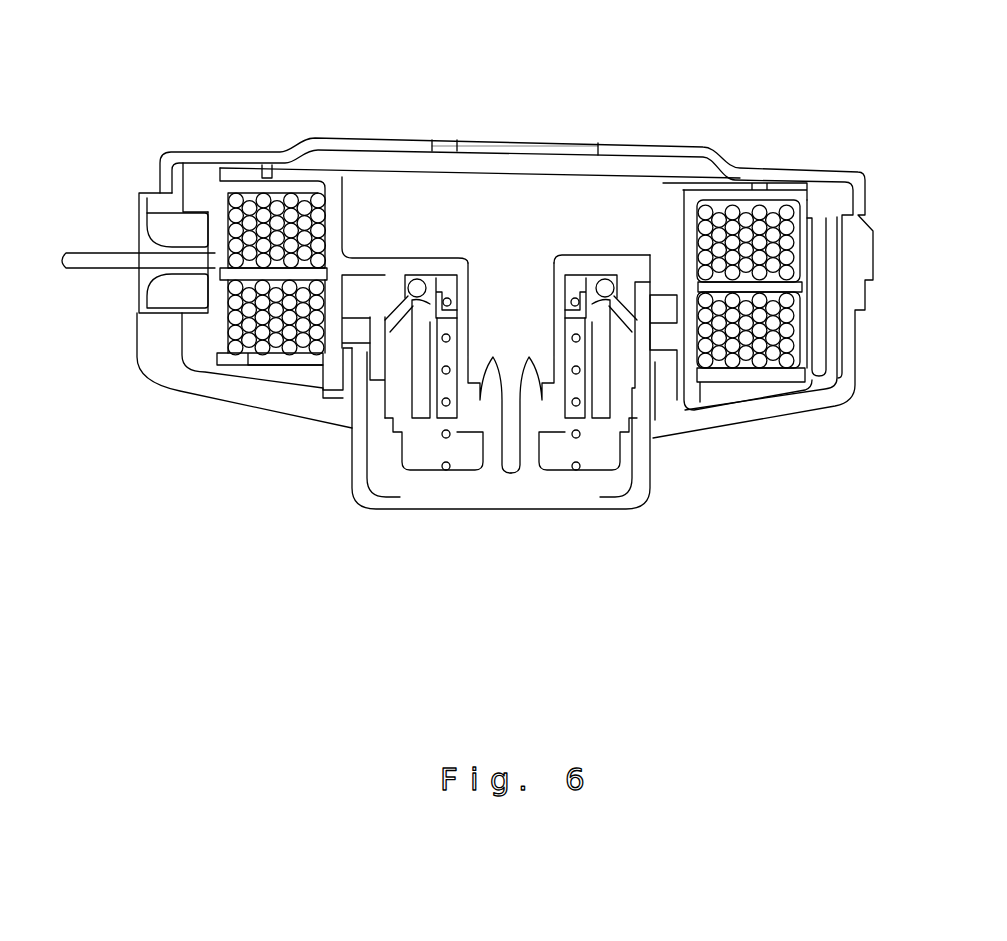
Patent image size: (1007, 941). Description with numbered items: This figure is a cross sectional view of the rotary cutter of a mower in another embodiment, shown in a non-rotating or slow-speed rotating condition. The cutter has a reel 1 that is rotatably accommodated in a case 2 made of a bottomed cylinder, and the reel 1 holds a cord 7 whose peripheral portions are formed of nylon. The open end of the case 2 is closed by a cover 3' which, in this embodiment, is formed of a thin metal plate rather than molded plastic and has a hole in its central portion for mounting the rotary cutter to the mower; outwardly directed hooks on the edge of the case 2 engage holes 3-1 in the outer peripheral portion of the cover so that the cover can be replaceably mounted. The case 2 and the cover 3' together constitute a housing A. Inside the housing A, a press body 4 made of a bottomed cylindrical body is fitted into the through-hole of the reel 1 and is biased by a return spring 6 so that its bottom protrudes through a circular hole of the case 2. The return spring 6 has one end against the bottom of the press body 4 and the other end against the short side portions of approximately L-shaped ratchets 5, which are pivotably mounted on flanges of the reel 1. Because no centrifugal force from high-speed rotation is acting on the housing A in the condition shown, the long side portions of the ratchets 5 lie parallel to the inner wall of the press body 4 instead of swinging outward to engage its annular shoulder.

The reel 1 is at (793, 372).
The case 2 is at (755, 418).
The cover 3' is at (516, 253).
The holes 3-1 is at (518, 150).
The press body 4 is at (540, 497).
The L-shaped ratchets 5 is at (417, 399).
The return spring 6 is at (446, 472).
The cord 7 is at (93, 268).
The housing A is at (661, 463).